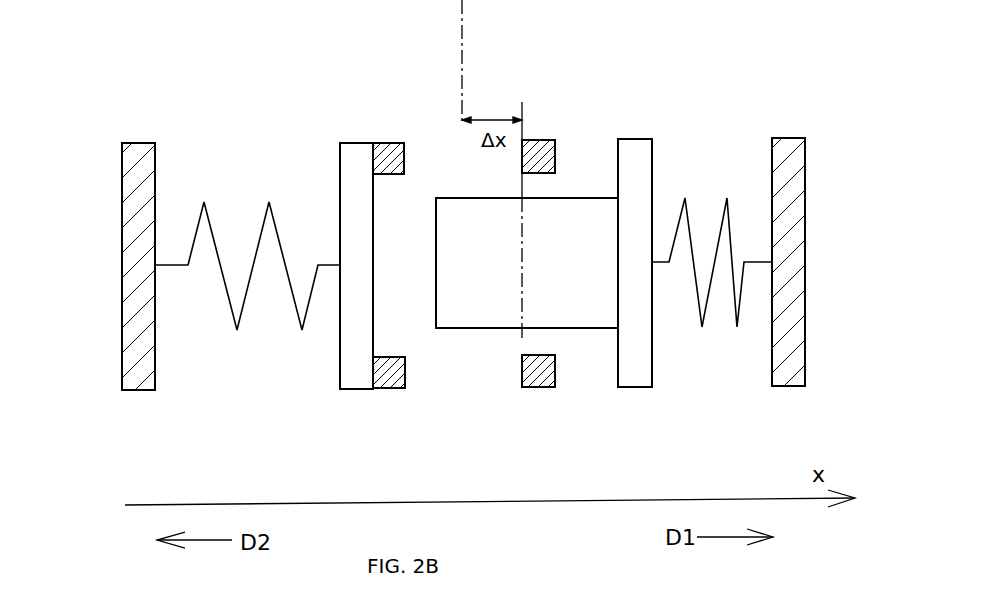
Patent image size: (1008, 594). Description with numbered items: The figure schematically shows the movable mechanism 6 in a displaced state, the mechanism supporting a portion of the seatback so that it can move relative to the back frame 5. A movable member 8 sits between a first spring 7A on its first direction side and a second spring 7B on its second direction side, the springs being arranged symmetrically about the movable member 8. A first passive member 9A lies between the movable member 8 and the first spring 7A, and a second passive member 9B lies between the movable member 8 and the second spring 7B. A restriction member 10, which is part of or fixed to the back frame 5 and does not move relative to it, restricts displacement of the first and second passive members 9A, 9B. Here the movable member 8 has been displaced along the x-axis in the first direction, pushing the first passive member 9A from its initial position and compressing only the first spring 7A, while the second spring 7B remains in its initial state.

The back frame 5 is at (127, 177).
The movable mechanism 6 is at (736, 72).
The first spring 7A is at (720, 220).
The second spring 7B is at (277, 225).
The movable member 8 is at (472, 317).
The first passive member 9A is at (640, 380).
The second passive member 9B is at (356, 383).
The restriction member 10 is at (390, 142).